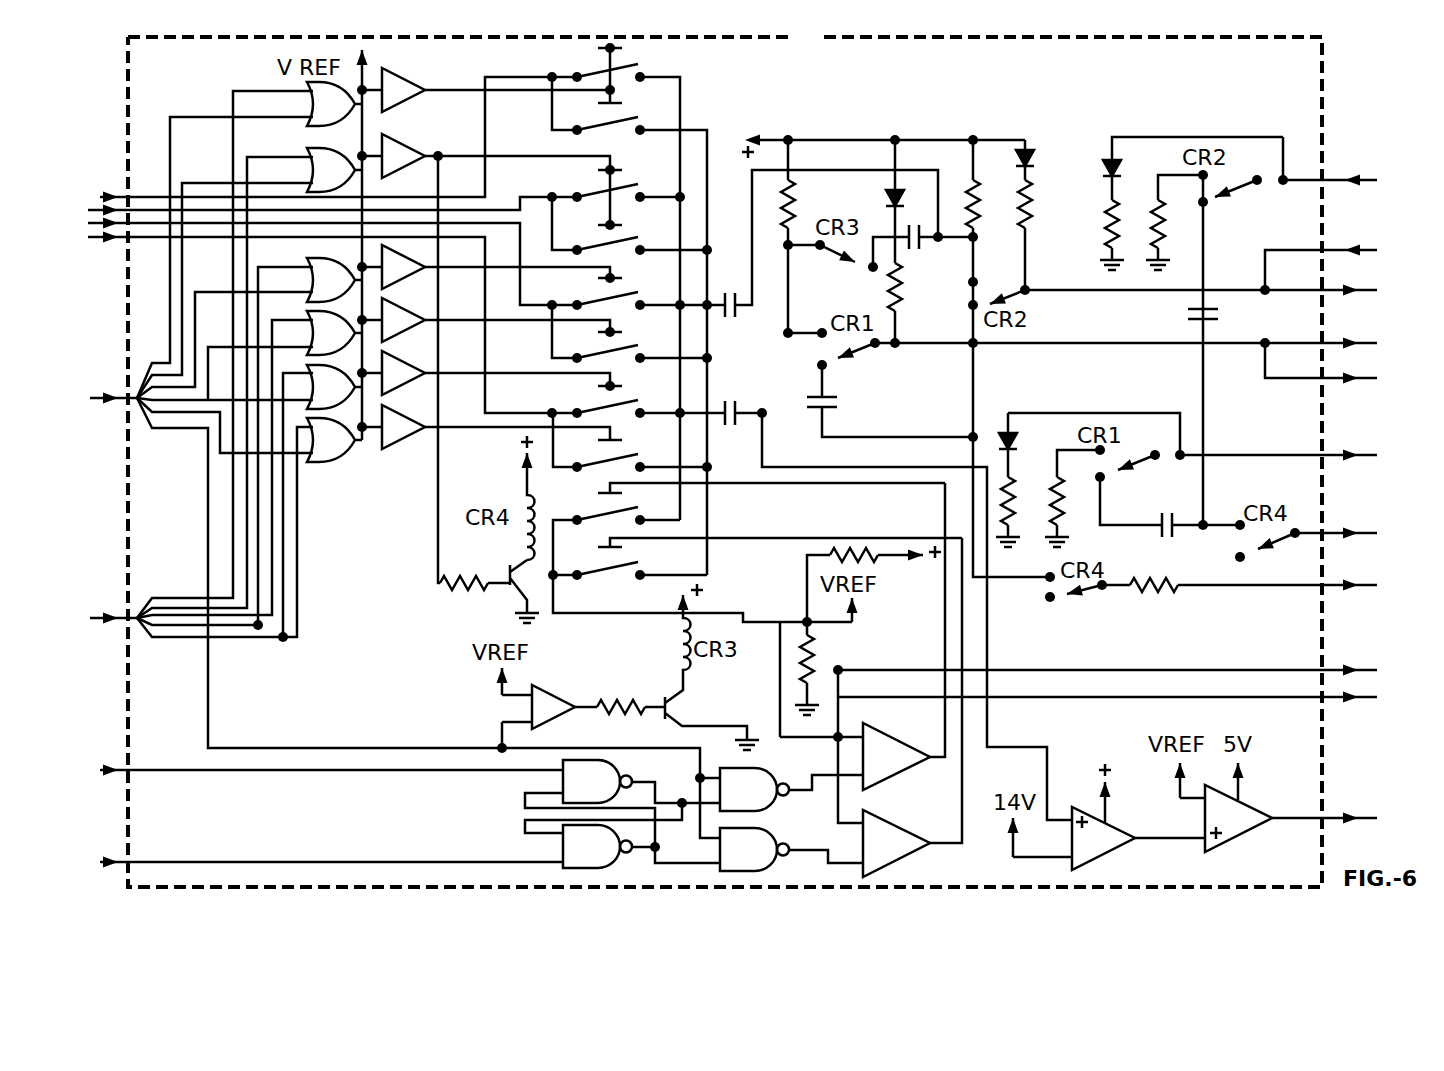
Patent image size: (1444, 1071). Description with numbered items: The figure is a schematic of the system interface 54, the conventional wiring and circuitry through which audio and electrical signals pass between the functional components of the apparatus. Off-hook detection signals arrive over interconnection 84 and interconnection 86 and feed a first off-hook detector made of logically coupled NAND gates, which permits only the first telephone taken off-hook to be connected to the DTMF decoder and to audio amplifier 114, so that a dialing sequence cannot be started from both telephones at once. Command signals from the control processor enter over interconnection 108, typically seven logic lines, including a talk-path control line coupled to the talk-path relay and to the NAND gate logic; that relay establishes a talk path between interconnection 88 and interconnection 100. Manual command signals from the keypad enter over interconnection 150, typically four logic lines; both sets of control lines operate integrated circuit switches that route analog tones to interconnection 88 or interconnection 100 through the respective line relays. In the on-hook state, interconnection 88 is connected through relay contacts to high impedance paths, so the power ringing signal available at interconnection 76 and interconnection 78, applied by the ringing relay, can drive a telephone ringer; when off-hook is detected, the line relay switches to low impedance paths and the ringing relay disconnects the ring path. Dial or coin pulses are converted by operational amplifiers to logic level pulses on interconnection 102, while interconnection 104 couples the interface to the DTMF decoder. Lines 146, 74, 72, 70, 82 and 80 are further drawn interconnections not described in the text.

The system interface 54 is at (725, 456).
The input line 146 is at (87, 197).
The signal line 74 is at (90, 210).
The signal line 72 is at (90, 223).
The signal line 70 is at (87, 237).
The interconnection 108 is at (284, 432).
The interconnection 150 is at (190, 366).
The interconnection 84 is at (319, 783).
The interconnection 86 is at (319, 850).
The interconnection 100 is at (1332, 216).
The output line 82 is at (1209, 280).
The output line 80 is at (1329, 333).
The interconnection 88 is at (1286, 402).
The interconnection 78 is at (1344, 524).
The interconnection 76 is at (1285, 576).
The interconnection 104 is at (1121, 660).
The audio amplifier 114 is at (1121, 687).
The interconnection 102 is at (1338, 807).